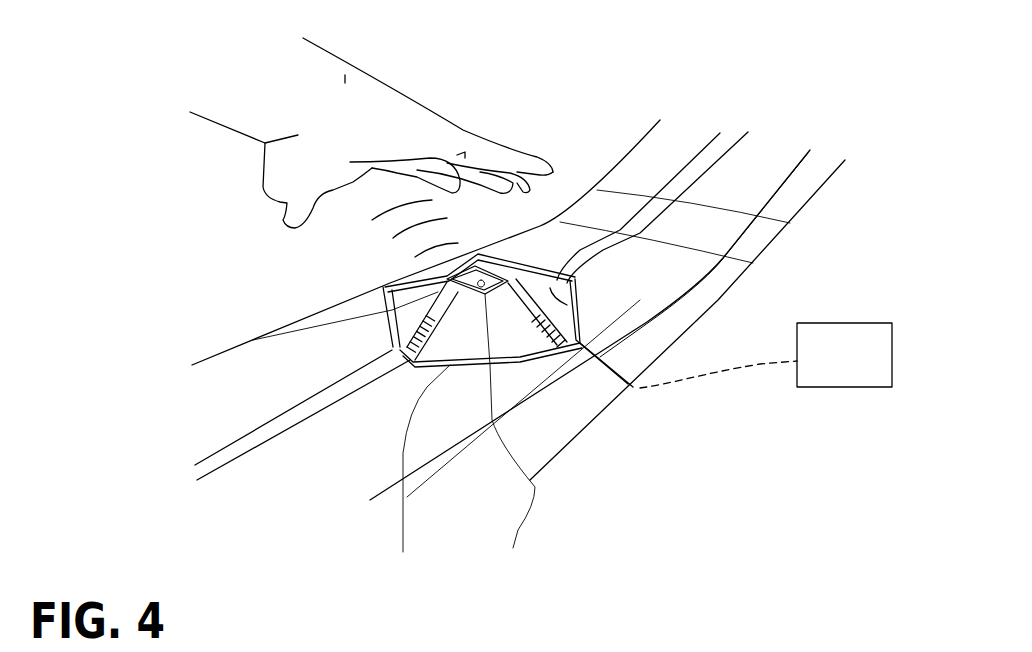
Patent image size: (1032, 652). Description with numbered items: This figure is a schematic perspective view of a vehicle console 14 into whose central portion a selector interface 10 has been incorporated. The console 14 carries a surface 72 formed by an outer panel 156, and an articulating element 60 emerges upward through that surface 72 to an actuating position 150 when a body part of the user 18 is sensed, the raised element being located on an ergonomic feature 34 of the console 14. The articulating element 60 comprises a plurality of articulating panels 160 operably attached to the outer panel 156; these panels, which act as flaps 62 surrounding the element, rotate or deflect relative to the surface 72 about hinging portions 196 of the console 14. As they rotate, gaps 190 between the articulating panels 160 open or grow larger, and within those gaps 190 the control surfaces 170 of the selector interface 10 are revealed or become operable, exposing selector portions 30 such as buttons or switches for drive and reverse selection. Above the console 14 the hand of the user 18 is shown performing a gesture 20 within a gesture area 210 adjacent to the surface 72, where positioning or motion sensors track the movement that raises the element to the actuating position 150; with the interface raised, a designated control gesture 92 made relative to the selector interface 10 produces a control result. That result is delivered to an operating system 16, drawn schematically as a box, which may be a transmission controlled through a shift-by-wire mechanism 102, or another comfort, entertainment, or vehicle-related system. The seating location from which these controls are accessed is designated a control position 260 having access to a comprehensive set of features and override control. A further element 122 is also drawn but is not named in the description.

The selector interface 10 is at (372, 277).
The console 14 is at (768, 105).
The operating system 16 is at (853, 321).
The user 18 is at (322, 78).
The gesture 20 is at (248, 183).
The selector portions 30 is at (416, 309).
The ergonomic feature 34 is at (460, 384).
The articulating element 60 is at (391, 348).
The flaps 62 is at (523, 350).
The surface 72 is at (650, 287).
The designated control gesture 92 is at (421, 96).
The shift-by-wire mechanism 102 is at (847, 390).
The trim strip 122 is at (781, 158).
The actuating position 150 is at (382, 406).
The outer panel 156 is at (357, 410).
The articulating panels 160 is at (565, 322).
The control surfaces 170 is at (388, 584).
The gaps 190 is at (567, 305).
The hinging portions 196 is at (500, 326).
The gesture area 210 is at (514, 216).
The control position 260 is at (267, 397).